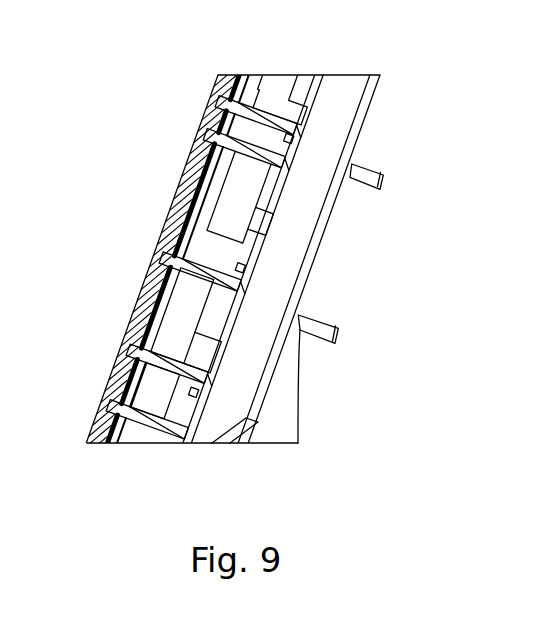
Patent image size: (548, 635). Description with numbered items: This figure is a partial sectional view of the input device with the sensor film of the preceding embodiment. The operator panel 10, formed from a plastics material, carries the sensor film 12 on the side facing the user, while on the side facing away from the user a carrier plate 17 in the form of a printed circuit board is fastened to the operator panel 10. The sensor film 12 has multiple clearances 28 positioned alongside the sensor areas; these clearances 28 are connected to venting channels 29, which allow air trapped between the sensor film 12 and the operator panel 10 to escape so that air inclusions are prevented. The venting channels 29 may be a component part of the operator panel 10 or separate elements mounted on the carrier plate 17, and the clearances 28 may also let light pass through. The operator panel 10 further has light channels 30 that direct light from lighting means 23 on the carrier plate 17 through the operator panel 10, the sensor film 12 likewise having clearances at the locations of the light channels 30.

The operator panel 10 is at (198, 162).
The sensor film 12 is at (147, 278).
The carrier plate 17 is at (232, 378).
The lighting means 23 is at (188, 415).
The clearances 28 is at (190, 208).
The venting channels 29 is at (245, 237).
The light channels 30 is at (162, 380).